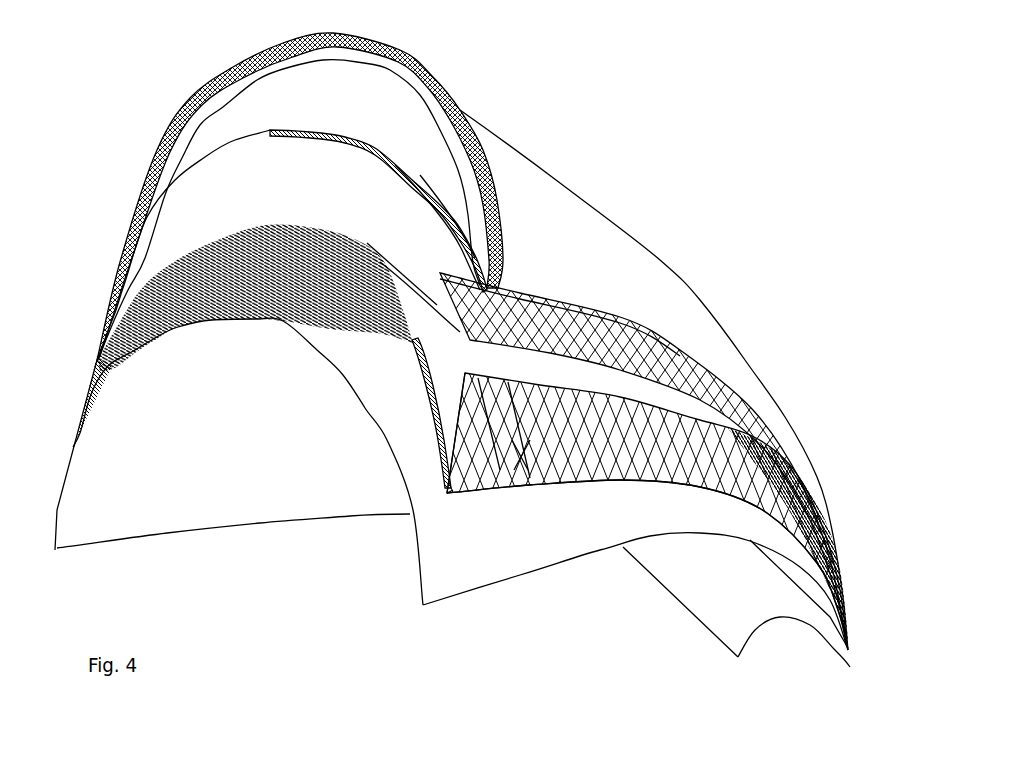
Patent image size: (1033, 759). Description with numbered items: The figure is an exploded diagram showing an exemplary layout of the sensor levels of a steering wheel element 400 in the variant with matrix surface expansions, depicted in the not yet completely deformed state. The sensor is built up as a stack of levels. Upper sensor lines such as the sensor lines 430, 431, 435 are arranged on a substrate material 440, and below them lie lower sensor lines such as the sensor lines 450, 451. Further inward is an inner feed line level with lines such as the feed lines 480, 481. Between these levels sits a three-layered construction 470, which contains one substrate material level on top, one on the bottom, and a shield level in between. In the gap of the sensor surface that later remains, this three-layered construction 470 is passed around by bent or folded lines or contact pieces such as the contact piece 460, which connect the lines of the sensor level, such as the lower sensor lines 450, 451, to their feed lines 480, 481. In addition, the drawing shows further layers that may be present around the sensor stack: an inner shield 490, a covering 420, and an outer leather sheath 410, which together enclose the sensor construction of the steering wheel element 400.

The steering wheel element 400 is at (142, 150).
The leather sheath 410 is at (465, 118).
The covering 420 is at (457, 157).
The upper sensor line 430 is at (520, 317).
The upper sensor line 431 is at (467, 243).
The upper sensor line 435 is at (273, 130).
The substrate material 440 is at (583, 370).
The lower sensor line 450 is at (490, 463).
The lower sensor line 451 is at (520, 460).
The contact piece 460 is at (487, 490).
The three-layered construction 470 is at (443, 480).
The feed line 480 is at (97, 368).
The feed line 481 is at (97, 362).
The inner shield 490 is at (343, 375).